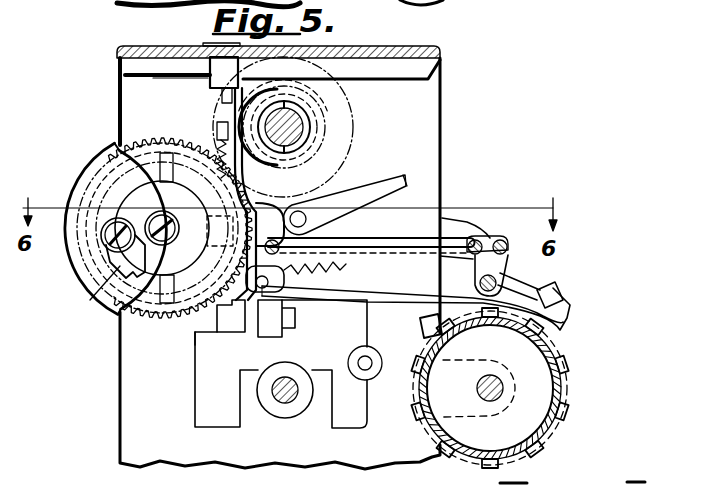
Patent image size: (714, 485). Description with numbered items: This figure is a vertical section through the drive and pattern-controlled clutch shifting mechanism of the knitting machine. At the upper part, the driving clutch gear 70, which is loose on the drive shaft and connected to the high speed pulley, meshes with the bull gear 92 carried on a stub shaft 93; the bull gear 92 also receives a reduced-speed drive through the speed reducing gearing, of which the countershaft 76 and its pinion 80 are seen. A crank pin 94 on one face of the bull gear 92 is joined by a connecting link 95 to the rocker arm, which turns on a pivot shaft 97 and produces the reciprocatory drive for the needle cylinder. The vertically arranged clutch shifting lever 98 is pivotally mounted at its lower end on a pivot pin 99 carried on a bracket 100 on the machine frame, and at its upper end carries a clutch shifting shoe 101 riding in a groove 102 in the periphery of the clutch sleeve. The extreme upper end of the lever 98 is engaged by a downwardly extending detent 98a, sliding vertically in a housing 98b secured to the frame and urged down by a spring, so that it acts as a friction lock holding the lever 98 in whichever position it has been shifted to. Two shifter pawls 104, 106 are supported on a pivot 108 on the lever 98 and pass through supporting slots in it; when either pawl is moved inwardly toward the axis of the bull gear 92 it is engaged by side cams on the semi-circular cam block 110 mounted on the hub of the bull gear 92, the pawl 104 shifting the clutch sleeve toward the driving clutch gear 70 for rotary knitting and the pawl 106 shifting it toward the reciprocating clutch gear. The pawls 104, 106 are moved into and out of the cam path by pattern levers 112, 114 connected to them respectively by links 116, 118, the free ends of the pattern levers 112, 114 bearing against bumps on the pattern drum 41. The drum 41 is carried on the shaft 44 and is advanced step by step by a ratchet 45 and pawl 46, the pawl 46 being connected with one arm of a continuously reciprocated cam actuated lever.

The pattern drum 41 is at (563, 362).
The shaft 44 is at (500, 387).
The ratchet 45 is at (424, 327).
The pawl 46 is at (414, 293).
The driving clutch gear 70 is at (353, 140).
The countershaft 76 is at (414, 180).
The pinion 80 is at (318, 272).
The bull gear 92 is at (104, 154).
The stub shaft 93 is at (152, 222).
The crank pin 94 is at (108, 248).
The connecting link 95 is at (96, 300).
The pivot shaft 97 is at (283, 398).
The clutch shifting lever 98 is at (230, 104).
The detent 98a is at (228, 94).
The housing 98b is at (215, 70).
The pivot pin 99 is at (217, 322).
The bracket 100 is at (273, 323).
The clutch shifting shoe 101 is at (262, 97).
The groove 102 is at (307, 116).
The shifter pawl 104 is at (343, 208).
The shifter pawl 106 is at (310, 198).
The pivot 108 is at (303, 273).
The cam block 110 is at (175, 160).
The pattern lever 112 is at (557, 293).
The pattern lever 114 is at (538, 288).
The link 116 is at (368, 247).
The link 118 is at (478, 284).